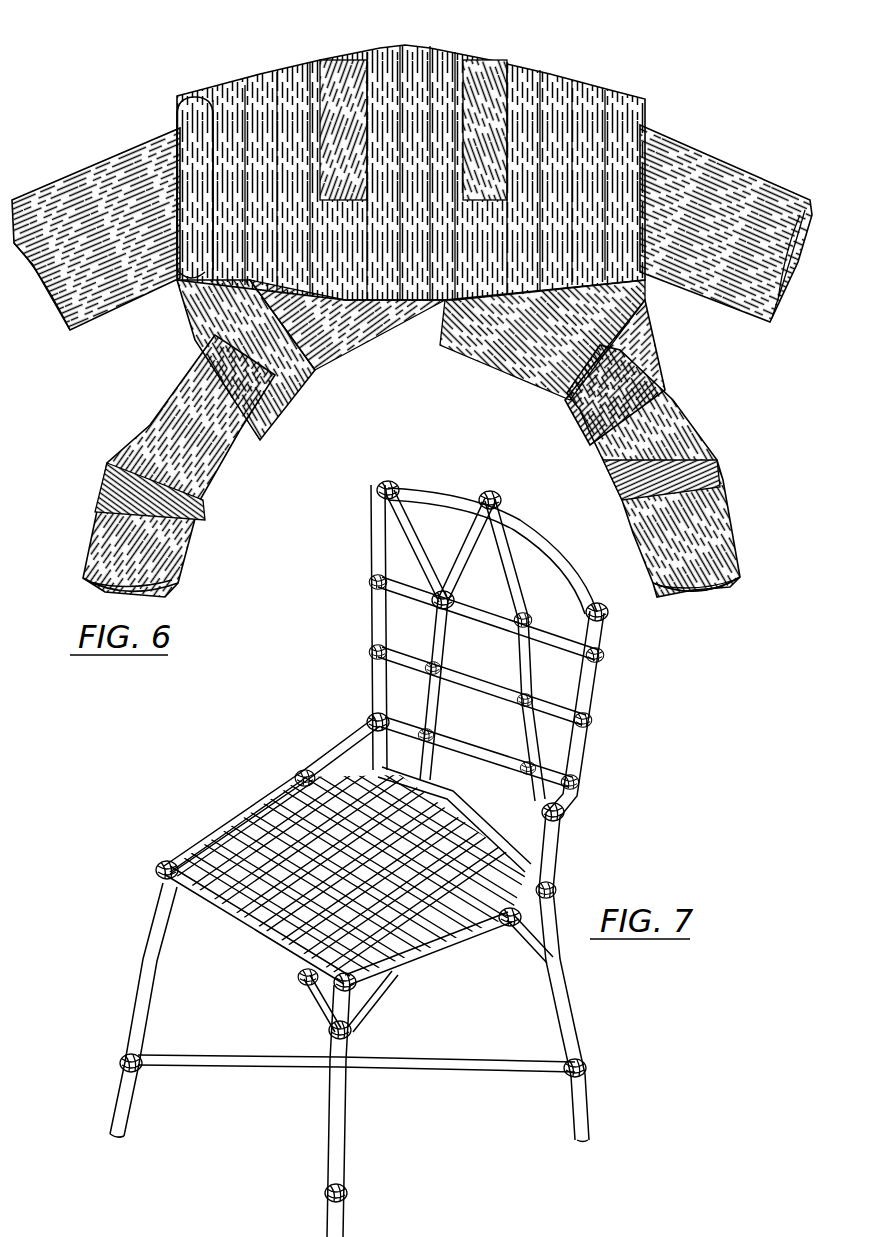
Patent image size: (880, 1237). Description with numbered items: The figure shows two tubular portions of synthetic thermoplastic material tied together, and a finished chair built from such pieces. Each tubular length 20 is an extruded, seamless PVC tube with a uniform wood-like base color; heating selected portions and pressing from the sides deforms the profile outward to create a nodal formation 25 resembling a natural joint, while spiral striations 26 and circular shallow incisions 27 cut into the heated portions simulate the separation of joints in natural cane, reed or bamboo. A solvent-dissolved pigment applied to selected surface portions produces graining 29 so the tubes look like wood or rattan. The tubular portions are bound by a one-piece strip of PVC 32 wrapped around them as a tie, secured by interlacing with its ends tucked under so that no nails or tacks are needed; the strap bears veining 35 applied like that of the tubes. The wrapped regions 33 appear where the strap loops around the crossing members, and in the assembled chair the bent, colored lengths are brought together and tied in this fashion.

In FIG. 6, the tubular length 20 is at (100, 200).
In FIG. 7, the tubular length 20 is at (499, 777).
In FIG. 6, the nodal formation 25 is at (203, 511).
In FIG. 7, the nodal formation 25 is at (600, 645).
In FIG. 6, the spiral striations 26 is at (107, 487).
In FIG. 7, the spiral striations 26 is at (140, 990).
In FIG. 6, the circular shallow incisions 27 is at (124, 455).
In FIG. 7, the circular shallow incisions 27 is at (376, 682).
In FIG. 6, the graining 29 is at (707, 188).
In FIG. 7, the graining 29 is at (556, 840).
In FIG. 6, the strip of PVC 32 is at (312, 74).
In FIG. 7, the strip of PVC 32 is at (564, 808).
In FIG. 6, the cane wrap loop 33 is at (307, 397).
In FIG. 7, the cane wrap loop 33 is at (367, 723).
In FIG. 6, the graining (veining) 35 is at (222, 88).
In FIG. 7, the graining (veining) 35 is at (262, 803).